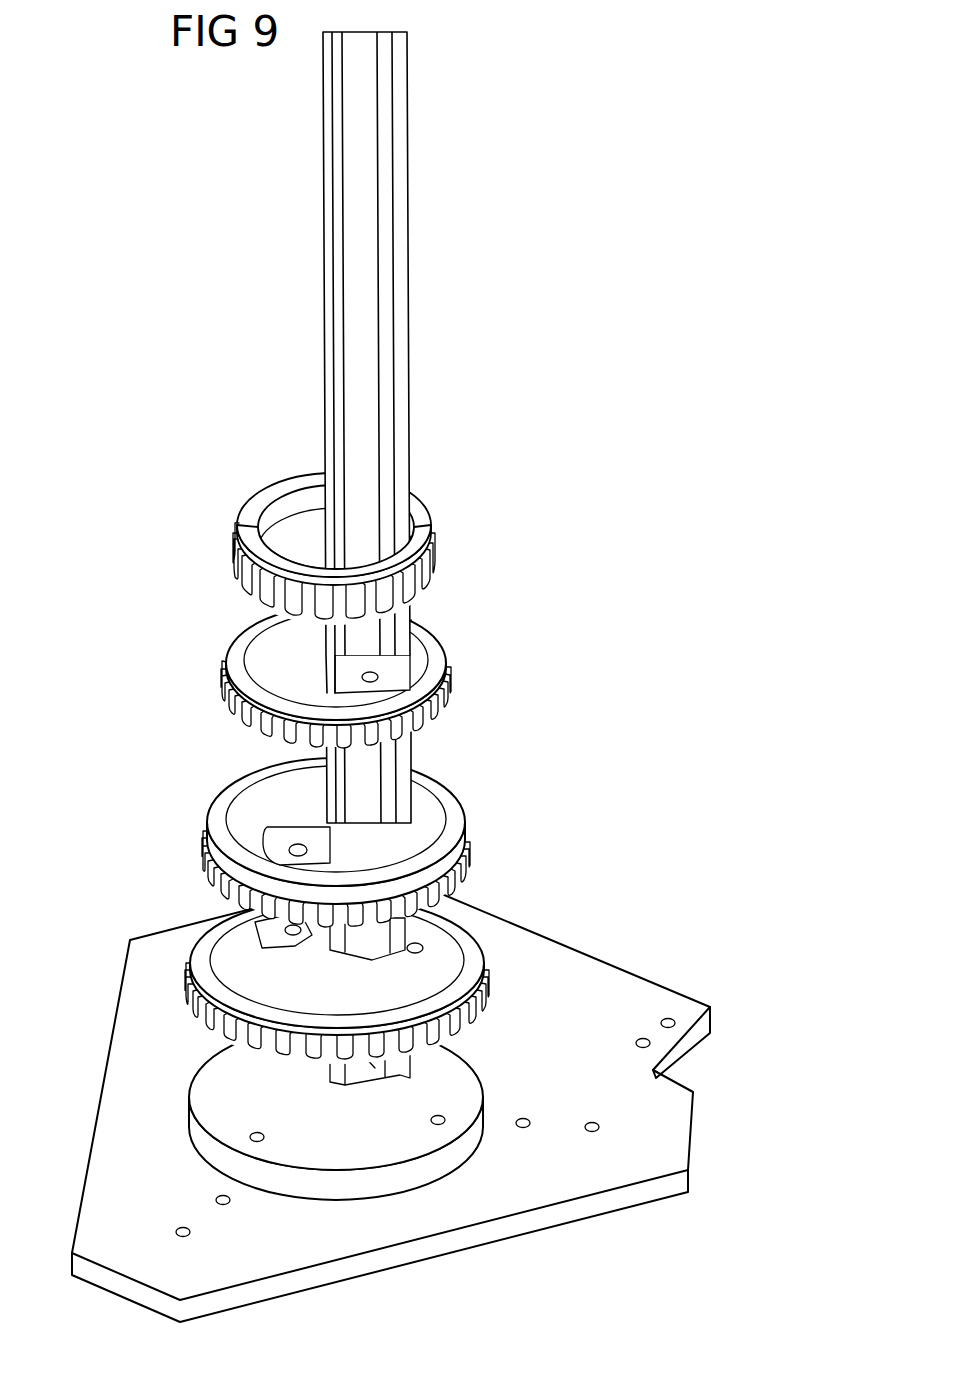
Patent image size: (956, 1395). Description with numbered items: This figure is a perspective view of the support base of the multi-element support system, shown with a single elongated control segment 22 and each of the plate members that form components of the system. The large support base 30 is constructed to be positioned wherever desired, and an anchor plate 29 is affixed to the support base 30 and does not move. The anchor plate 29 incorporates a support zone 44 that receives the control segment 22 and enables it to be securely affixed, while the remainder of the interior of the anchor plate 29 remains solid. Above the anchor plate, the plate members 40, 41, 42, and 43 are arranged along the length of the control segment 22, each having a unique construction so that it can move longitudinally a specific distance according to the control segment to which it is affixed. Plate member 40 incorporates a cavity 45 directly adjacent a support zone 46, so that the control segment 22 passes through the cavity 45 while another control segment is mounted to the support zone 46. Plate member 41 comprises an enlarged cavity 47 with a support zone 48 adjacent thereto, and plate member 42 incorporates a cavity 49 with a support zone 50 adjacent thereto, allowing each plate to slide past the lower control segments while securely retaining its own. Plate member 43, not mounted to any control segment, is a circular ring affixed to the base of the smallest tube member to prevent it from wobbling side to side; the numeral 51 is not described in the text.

The control segment 22 is at (402, 193).
The anchor plate 29 is at (393, 1185).
The support base 30 is at (160, 1272).
The plate member 40 is at (299, 980).
The plate member 41 is at (306, 830).
The plate member 42 is at (340, 676).
The plate member 43 is at (329, 362).
The support zone 44 is at (527, 1013).
The cavity 45 is at (273, 945).
The support zone 46 is at (197, 1002).
The enlarged cavity 47 is at (262, 838).
The support zone 48 is at (213, 862).
The cavity 49 is at (262, 660).
The support zone 50 is at (335, 678).
The bore of toothed ring 51 is at (257, 505).